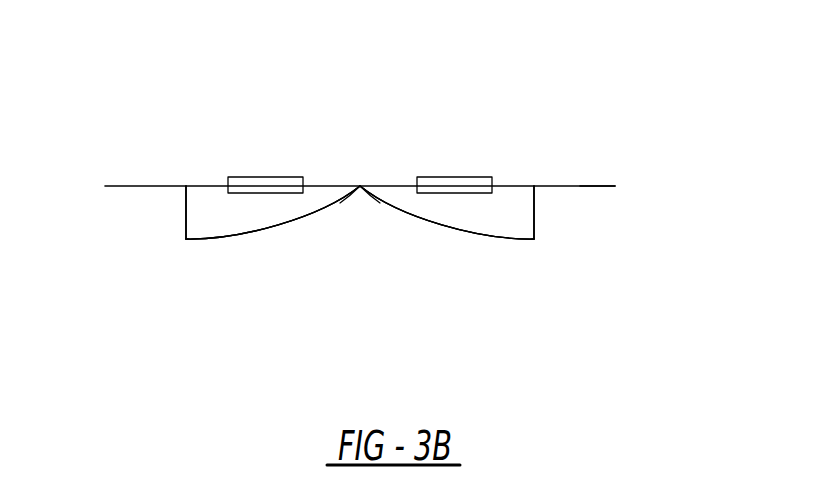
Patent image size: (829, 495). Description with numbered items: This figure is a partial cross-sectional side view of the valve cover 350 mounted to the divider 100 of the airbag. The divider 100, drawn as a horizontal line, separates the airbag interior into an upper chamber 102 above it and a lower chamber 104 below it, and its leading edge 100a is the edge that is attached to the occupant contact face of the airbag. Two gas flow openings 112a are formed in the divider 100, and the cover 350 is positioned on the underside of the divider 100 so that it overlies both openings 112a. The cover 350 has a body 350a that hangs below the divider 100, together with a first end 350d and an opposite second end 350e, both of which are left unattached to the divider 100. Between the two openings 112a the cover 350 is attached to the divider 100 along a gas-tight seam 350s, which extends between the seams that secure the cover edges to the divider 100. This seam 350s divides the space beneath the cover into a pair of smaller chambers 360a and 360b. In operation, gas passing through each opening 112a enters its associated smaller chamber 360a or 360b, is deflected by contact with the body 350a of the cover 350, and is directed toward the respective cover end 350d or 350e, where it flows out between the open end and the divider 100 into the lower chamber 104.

The divider 100 is at (563, 187).
The leading edge 100a is at (596, 187).
The upper chamber 102 is at (368, 122).
The lower chamber 104 is at (478, 308).
The gas flow openings 112a is at (267, 177).
The valve cover 350 is at (186, 240).
The body 350a is at (253, 220).
The first end 350d is at (182, 208).
The second end 350e is at (534, 213).
The gas-tight seam 350s is at (360, 187).
The smaller chamber 360a is at (220, 212).
The smaller chamber 360b is at (500, 222).